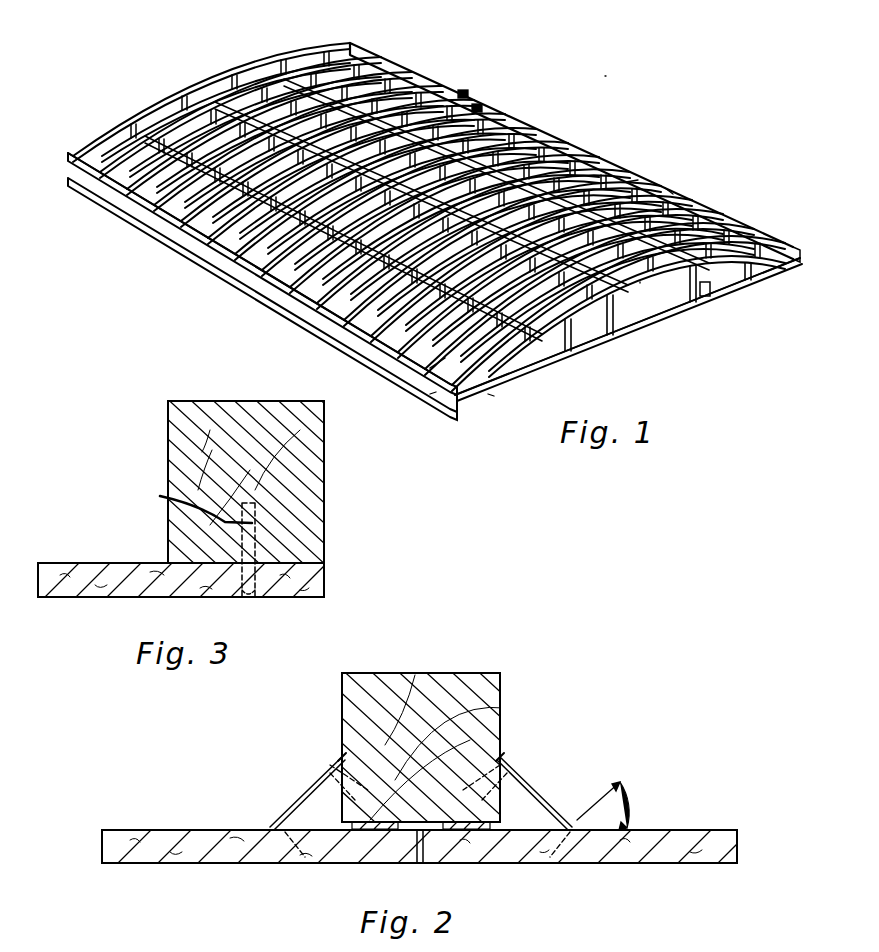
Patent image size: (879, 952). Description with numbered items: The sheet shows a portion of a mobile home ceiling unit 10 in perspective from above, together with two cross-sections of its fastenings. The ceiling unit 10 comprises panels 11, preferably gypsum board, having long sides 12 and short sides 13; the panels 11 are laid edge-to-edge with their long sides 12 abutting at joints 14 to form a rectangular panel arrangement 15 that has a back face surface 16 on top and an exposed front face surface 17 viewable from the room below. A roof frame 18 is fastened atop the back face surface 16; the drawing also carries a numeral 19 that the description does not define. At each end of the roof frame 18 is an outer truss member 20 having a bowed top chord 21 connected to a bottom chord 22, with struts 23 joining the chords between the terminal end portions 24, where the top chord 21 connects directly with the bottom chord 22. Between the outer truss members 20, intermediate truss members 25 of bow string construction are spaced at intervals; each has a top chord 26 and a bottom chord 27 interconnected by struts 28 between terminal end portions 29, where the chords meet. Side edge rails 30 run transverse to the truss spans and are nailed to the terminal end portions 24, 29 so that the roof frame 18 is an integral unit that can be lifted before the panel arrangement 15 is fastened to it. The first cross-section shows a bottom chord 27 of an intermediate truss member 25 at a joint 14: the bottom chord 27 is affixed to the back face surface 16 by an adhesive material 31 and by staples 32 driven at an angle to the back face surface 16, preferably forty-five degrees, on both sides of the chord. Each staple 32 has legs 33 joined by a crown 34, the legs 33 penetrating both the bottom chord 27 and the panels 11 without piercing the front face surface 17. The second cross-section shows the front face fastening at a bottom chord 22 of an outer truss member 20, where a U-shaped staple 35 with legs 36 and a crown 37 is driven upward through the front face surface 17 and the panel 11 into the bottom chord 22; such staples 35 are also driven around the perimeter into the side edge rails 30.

In FIG. 1, the mobile home ceiling unit 10 is at (606, 75).
In FIG. 1, the panels 11 is at (346, 339).
In FIG. 3, the panels 11 is at (117, 562).
In FIG. 2, the panels 11 is at (185, 842).
In FIG. 1, the long sides 12 is at (668, 292).
In FIG. 3, the long sides 12 is at (325, 580).
In FIG. 2, the long sides 12 is at (405, 853).
In FIG. 1, the short sides 13 is at (367, 356).
In FIG. 1, the joints 14 is at (264, 298).
In FIG. 2, the joints 14 is at (420, 865).
In FIG. 1, the panel arrangement 15 is at (670, 301).
In FIG. 1, the back face surface 16 is at (672, 190).
In FIG. 3, the back face surface 16 is at (70, 565).
In FIG. 2, the back face surface 16 is at (130, 835).
In FIG. 1, the front face surface 17 is at (656, 318).
In FIG. 3, the front face surface 17 is at (100, 598).
In FIG. 2, the front face surface 17 is at (190, 865).
In FIG. 1, the roof frame 18 is at (240, 72).
In FIG. 1, the arch rib 19 is at (385, 60).
In FIG. 1, the outer truss member 20 is at (738, 238).
In FIG. 1, the top chord 21 is at (732, 223).
In FIG. 1, the bottom chord 22 is at (707, 284).
In FIG. 3, the bottom chord 22 is at (310, 490).
In FIG. 1, the struts 23 is at (748, 272).
In FIG. 1, the terminal end portions 24 is at (793, 255).
In FIG. 1, the intermediate truss members 25 is at (341, 48).
In FIG. 1, the top chord 26 is at (464, 92).
In FIG. 1, the bottom chord 27 is at (479, 108).
In FIG. 2, the bottom chord 27 is at (416, 690).
In FIG. 1, the struts 28 is at (318, 58).
In FIG. 1, the terminal end portions 29 is at (212, 250).
In FIG. 1, the side edge rails 30 is at (230, 292).
In FIG. 1, the adhesive material 31 is at (634, 181).
In FIG. 2, the adhesive material 31 is at (375, 832).
In FIG. 1, the staples 32 is at (431, 368).
In FIG. 2, the staples 32 is at (292, 790).
In FIG. 2, the legs 33 is at (355, 762).
In FIG. 2, the crown 34 is at (330, 763).
In FIG. 1, the staple 35 is at (491, 395).
In FIG. 3, the staple 35 is at (260, 536).
In FIG. 3, the legs 36 is at (160, 496).
In FIG. 3, the crown 37 is at (249, 598).